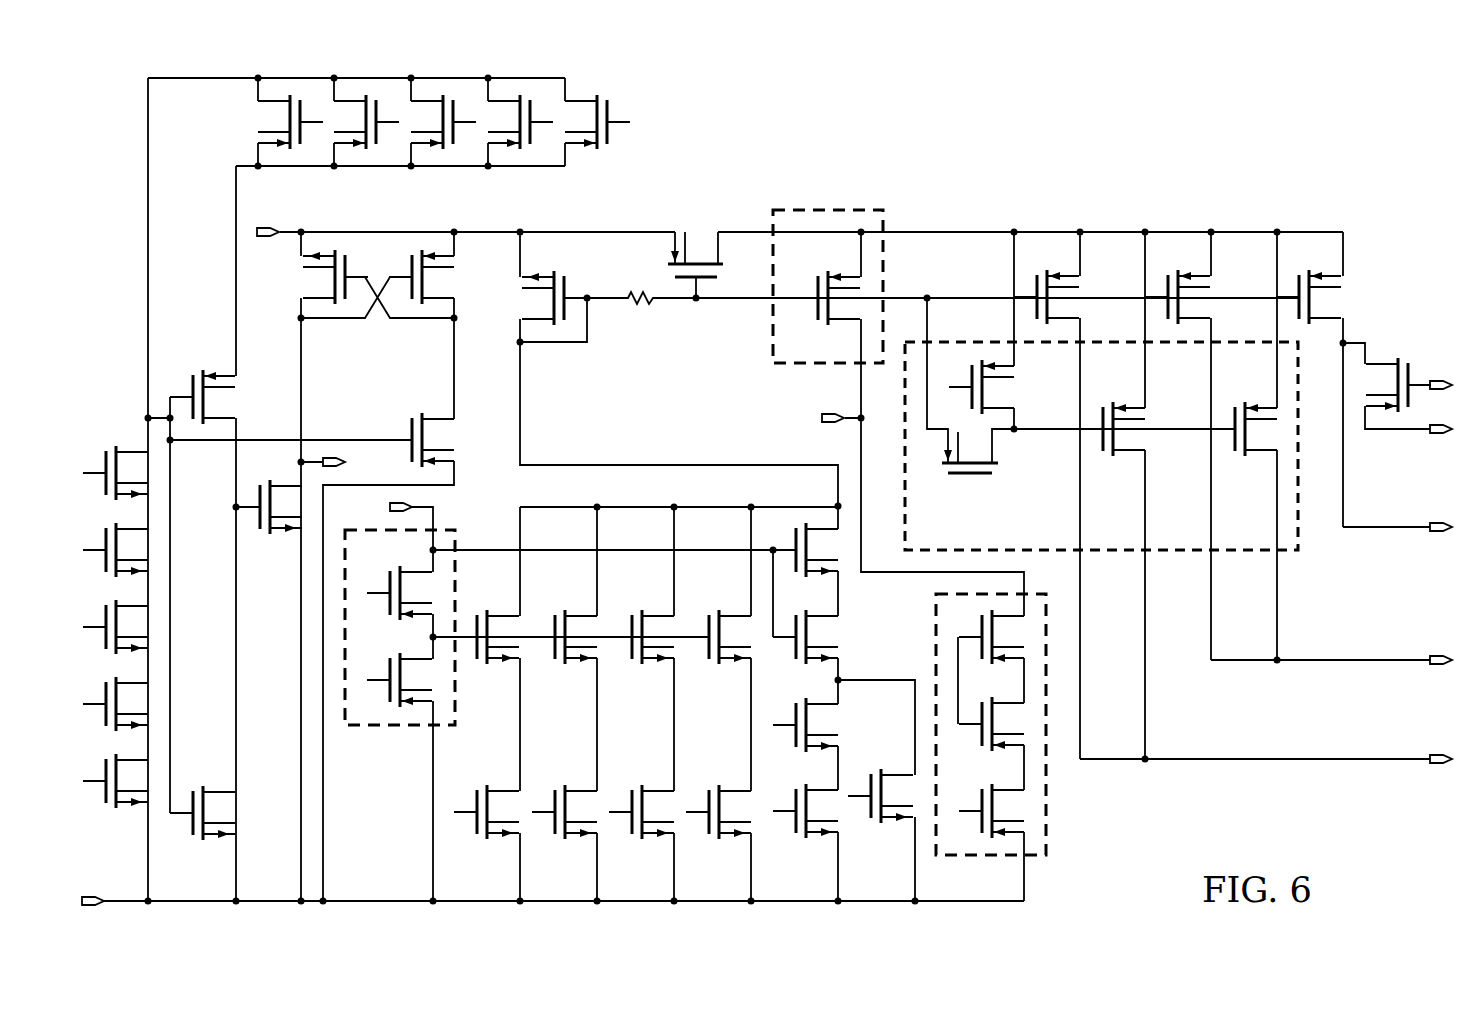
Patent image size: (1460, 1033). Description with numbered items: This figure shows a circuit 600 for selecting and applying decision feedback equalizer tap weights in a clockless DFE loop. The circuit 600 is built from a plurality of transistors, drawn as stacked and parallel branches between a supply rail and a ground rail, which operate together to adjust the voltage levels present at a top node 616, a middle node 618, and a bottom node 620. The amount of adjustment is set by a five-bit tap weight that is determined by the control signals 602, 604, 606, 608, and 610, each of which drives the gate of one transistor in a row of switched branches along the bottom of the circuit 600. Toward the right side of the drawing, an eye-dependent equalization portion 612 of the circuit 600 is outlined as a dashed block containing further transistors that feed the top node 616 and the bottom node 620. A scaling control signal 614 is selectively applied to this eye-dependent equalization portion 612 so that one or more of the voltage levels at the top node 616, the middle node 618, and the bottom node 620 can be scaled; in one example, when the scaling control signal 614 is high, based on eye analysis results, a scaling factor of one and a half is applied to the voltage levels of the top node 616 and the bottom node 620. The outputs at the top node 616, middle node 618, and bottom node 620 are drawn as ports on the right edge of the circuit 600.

The circuit 600 is at (1145, 132).
The control signal 602 is at (462, 815).
The control signal 604 is at (539, 815).
The control signal 606 is at (616, 815).
The control signal 608 is at (693, 815).
The control signal 610 is at (780, 812).
The eye-dependent equalization portion 612 is at (1178, 528).
The scaling control signal 614 is at (970, 475).
The top node 616 is at (1373, 661).
The middle node 618 is at (1387, 527).
The bottom node 620 is at (1365, 760).